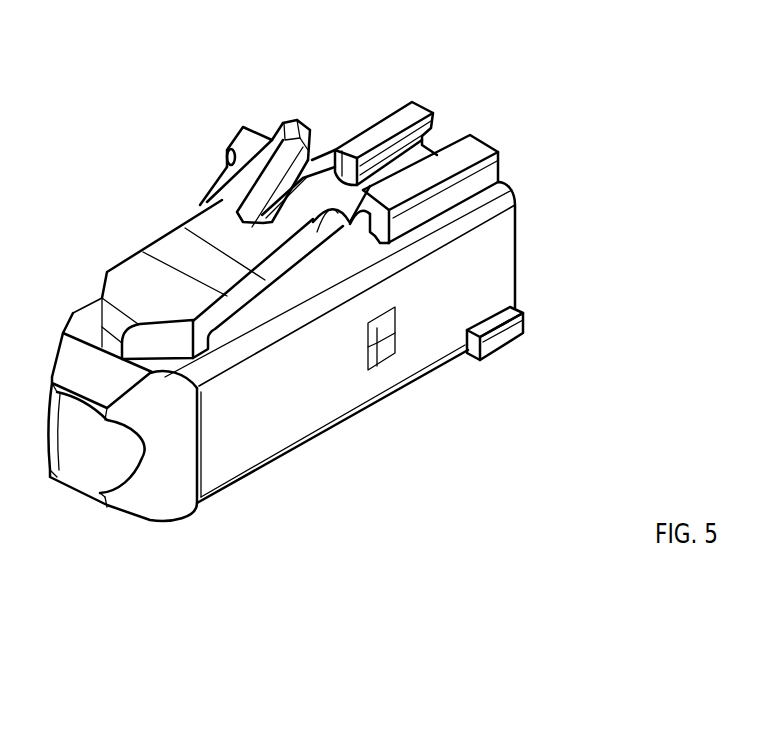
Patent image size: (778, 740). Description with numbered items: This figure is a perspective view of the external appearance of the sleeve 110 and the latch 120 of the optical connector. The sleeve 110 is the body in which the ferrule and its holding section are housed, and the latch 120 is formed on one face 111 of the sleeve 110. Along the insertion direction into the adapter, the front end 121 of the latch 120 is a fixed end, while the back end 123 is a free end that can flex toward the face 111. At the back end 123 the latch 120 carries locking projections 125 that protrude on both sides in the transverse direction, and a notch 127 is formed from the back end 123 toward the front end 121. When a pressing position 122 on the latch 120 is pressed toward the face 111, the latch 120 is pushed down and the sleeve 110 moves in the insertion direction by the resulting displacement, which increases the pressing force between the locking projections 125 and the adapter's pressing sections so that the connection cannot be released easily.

The sleeve 110 is at (295, 418).
The face 111 is at (312, 270).
The latch 120 is at (185, 215).
The front end 121 is at (140, 277).
The pressing position 122 is at (243, 183).
The back end 123 is at (342, 200).
The locking projections 125 is at (316, 150).
The notch 127 is at (292, 118).